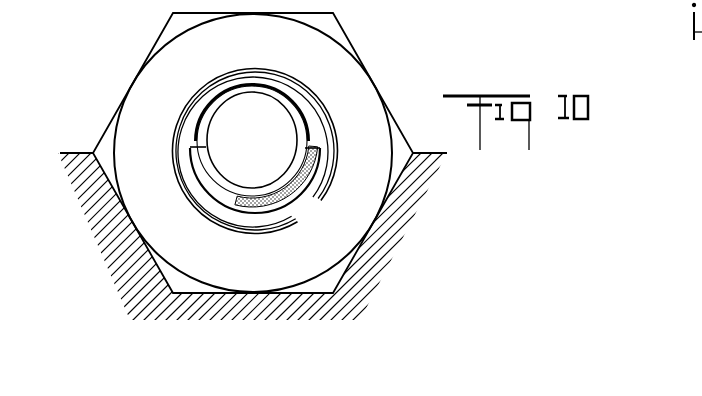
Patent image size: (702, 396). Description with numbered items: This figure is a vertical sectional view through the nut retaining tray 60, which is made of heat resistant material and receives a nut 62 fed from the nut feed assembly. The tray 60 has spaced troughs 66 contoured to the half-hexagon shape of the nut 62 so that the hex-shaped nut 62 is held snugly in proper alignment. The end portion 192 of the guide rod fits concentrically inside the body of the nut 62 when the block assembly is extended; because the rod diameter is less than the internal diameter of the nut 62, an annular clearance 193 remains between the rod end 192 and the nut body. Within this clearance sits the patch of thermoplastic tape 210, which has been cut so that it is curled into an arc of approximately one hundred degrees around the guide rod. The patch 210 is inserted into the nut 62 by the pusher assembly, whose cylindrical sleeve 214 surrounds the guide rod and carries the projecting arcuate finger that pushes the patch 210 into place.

The nut retaining tray 60 is at (112, 231).
The nut 62 is at (318, 43).
The trough 66 is at (362, 255).
The end portion 192 is at (230, 125).
The annular clearance 193 is at (312, 136).
The patch of tape 210 is at (295, 183).
The cylindrical sleeve 214 is at (210, 192).